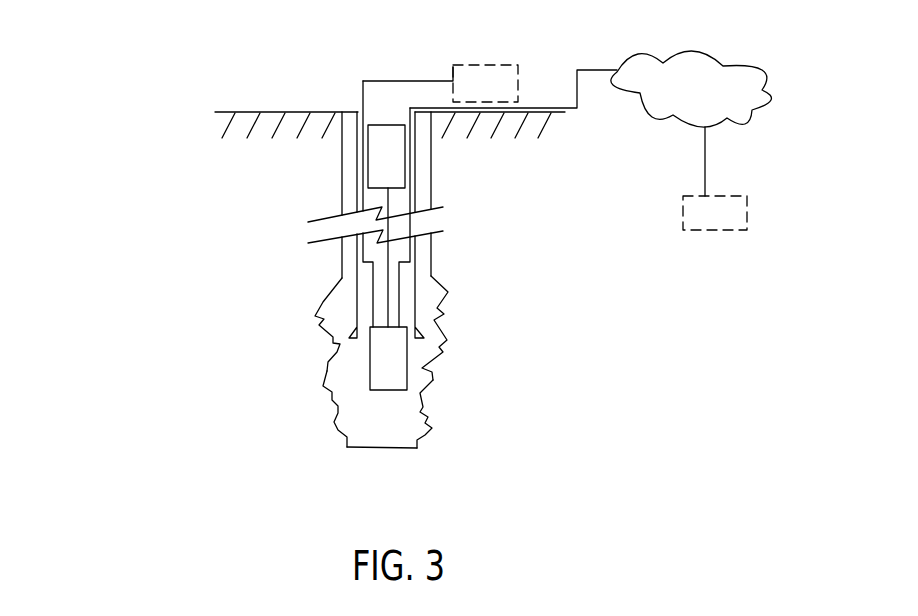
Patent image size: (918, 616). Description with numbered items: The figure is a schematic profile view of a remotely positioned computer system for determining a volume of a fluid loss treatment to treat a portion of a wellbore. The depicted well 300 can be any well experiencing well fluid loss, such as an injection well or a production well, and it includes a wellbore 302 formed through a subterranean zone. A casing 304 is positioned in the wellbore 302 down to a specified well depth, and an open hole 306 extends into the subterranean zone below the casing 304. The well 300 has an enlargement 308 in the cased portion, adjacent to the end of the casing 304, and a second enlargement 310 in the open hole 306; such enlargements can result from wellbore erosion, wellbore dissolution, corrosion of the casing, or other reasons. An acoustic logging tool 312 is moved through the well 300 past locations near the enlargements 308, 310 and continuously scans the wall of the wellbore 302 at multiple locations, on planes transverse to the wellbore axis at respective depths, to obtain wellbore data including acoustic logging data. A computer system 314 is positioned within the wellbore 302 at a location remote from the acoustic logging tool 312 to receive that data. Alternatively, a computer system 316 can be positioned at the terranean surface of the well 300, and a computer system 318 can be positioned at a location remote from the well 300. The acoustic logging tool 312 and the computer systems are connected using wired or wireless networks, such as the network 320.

The well 300 is at (136, 160).
The wellbore 302 is at (433, 152).
The casing 304 is at (415, 203).
The open hole 306 is at (405, 418).
The enlargement in the cased portion 308 is at (323, 305).
The enlargement in the open hole 310 is at (323, 384).
The acoustic logging tool 312 is at (407, 353).
The computer system 314 is at (368, 150).
The computer system 316 is at (495, 65).
The computer system 318 is at (725, 196).
The network 320 is at (590, 89).